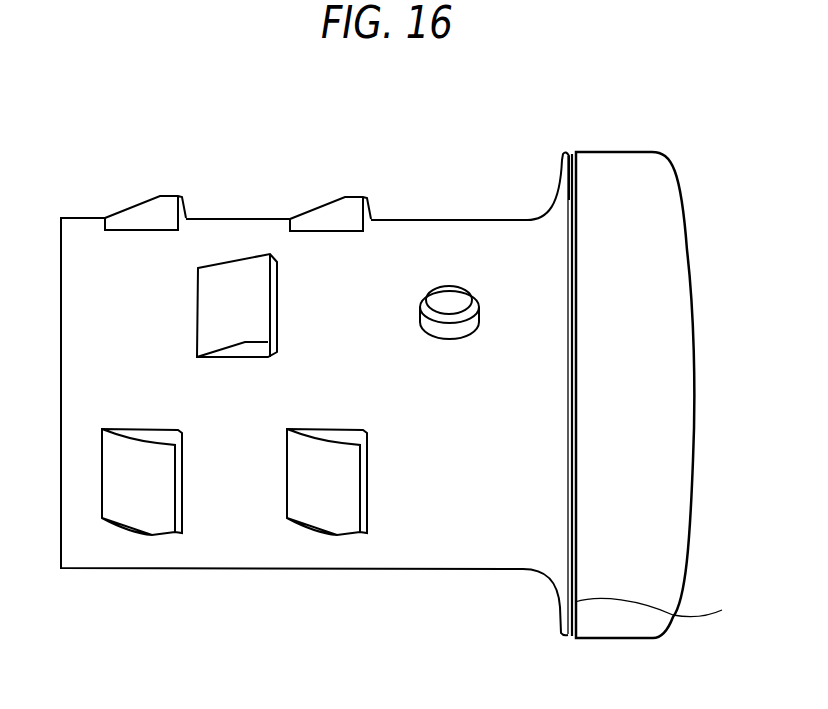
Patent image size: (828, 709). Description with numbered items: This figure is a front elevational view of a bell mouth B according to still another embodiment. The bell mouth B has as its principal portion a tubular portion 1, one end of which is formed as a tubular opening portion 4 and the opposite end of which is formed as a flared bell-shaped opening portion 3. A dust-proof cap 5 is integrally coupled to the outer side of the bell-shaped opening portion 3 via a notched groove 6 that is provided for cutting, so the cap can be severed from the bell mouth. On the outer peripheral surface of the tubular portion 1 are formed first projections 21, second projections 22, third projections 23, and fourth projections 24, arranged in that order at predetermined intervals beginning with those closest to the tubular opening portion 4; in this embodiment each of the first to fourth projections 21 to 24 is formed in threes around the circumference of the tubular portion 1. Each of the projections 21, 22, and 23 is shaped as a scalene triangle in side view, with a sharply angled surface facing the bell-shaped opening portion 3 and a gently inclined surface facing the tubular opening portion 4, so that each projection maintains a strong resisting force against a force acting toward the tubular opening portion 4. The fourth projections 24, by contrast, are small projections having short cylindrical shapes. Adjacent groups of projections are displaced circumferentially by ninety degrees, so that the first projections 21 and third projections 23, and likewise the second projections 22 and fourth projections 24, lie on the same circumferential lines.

The tubular portion 1 is at (490, 220).
The bell-shaped opening portion 3 is at (553, 570).
The tubular opening portion 4 is at (85, 513).
The dust-proof cap 5 is at (677, 285).
The notched groove 6 is at (657, 611).
The first projections 21 is at (164, 210).
The second projections 22 is at (235, 278).
The third projections 23 is at (347, 212).
The fourth projections 24 is at (449, 297).
The bell mouth B is at (614, 128).